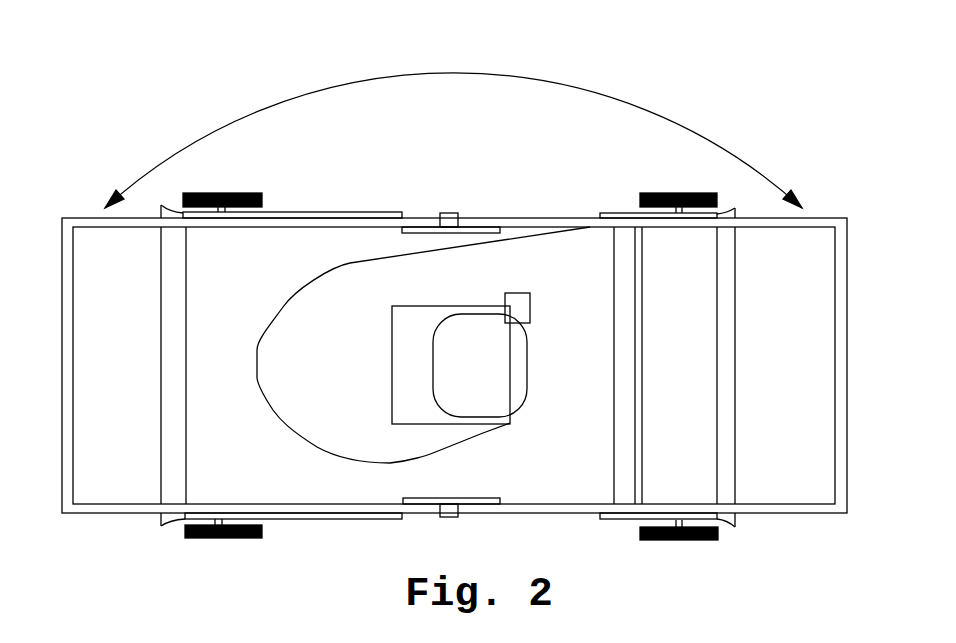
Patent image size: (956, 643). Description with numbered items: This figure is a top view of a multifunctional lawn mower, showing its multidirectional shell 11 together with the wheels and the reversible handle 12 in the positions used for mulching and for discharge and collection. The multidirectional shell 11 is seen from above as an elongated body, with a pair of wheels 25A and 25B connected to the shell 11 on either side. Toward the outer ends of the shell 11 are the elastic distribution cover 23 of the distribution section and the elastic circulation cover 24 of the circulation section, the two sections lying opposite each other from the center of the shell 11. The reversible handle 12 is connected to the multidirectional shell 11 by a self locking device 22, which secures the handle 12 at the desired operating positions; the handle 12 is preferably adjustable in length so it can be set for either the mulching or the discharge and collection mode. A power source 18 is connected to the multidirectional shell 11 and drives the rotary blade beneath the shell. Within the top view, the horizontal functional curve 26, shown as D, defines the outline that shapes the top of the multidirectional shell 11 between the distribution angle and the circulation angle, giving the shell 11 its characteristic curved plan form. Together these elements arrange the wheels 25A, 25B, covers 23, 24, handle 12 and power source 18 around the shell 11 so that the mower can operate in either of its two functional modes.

The multidirectional shell 11 is at (535, 277).
The reversible handle 12 is at (835, 363).
The power source 18 is at (462, 306).
The self locking device 22 is at (448, 213).
The elastic distribution cover 23 is at (160, 238).
The elastic circulation cover 24 is at (735, 237).
The wheel 25A is at (238, 192).
The wheel 25B is at (677, 195).
The horizontal functional curve 26 is at (350, 263).
The horizontal functional curve D is at (392, 257).